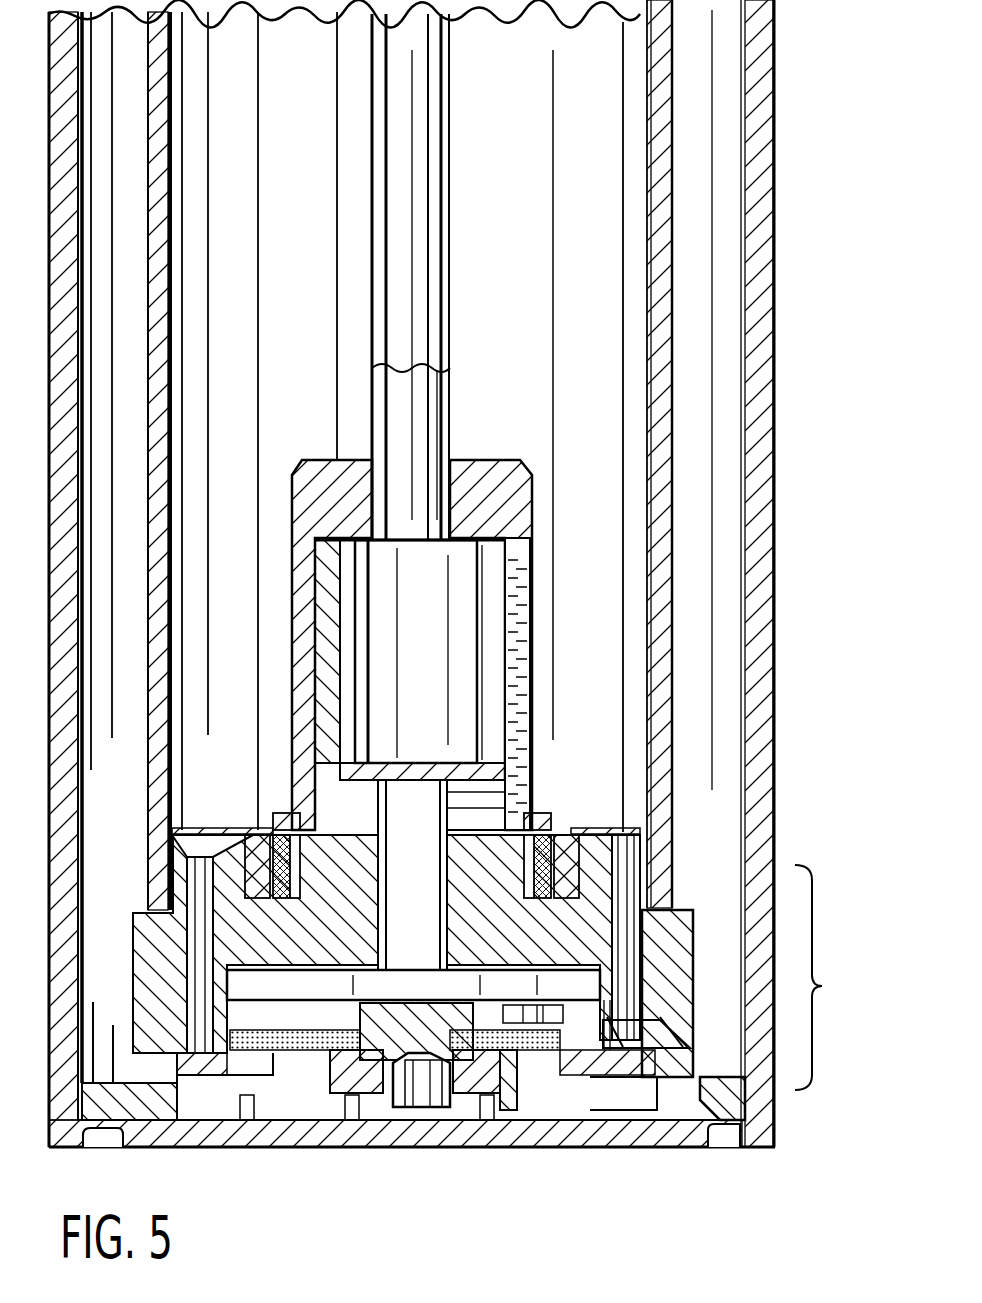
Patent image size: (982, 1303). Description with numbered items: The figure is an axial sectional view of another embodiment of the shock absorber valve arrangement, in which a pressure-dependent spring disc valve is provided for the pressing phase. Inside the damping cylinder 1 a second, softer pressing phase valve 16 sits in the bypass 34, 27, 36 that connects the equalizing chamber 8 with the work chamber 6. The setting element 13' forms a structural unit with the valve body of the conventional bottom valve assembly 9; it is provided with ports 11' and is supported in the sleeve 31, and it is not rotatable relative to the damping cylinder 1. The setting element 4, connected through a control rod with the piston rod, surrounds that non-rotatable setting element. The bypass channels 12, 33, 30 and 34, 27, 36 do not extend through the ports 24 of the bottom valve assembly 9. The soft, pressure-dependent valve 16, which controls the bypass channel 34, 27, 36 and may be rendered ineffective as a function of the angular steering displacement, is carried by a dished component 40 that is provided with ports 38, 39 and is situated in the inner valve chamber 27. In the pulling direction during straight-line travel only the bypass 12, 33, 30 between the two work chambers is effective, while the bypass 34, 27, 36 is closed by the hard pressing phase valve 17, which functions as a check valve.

The damping cylinder 1 is at (656, 462).
The setting element 4 is at (484, 488).
The work chamber 6 is at (633, 60).
The equalizing chamber 8 is at (700, 124).
The bottom valve assembly 9 is at (822, 986).
The ports 11' is at (456, 660).
The bypass channel 12 is at (398, 414).
The setting element 13' is at (652, 981).
The pressing phase valve 16 is at (540, 1048).
The hard pressing phase valve 17 is at (598, 1082).
The ports 24 is at (205, 880).
The inner valve chamber 27 is at (557, 983).
The bypass channel 30 is at (460, 684).
The sleeve 31 is at (278, 832).
The bypass channel 33 is at (522, 603).
The bypass channel 34 is at (503, 808).
The bypass channel 36 is at (235, 1045).
The port 38 is at (333, 1060).
The port 39 is at (533, 1055).
The dished component 40 is at (222, 994).